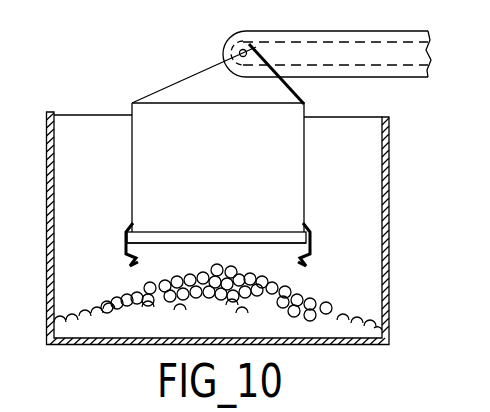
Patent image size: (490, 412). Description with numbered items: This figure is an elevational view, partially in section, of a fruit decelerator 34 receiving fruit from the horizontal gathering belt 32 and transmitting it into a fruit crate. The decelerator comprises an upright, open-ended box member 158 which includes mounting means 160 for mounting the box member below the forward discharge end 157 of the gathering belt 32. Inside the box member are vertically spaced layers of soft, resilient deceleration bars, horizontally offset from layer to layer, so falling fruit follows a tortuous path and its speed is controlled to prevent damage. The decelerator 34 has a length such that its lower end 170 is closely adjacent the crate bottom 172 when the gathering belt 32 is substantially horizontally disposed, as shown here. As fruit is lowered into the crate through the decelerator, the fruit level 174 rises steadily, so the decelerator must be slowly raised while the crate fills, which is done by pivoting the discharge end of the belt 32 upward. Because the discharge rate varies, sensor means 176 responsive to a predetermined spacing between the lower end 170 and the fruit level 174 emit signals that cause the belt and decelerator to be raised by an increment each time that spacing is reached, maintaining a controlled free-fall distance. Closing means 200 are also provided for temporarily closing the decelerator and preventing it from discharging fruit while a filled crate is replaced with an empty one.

The horizontal gathering belt 32 is at (348, 32).
The decelerator 34 is at (310, 184).
The discharge end 157 is at (228, 35).
The box member 158 is at (132, 189).
The mounting means 160 is at (183, 73).
The lower end 170 is at (246, 244).
The crate bottom 172 is at (310, 344).
The fruit level 174 is at (327, 306).
The sensor means 176 is at (118, 230).
The closing means 200 is at (160, 251).